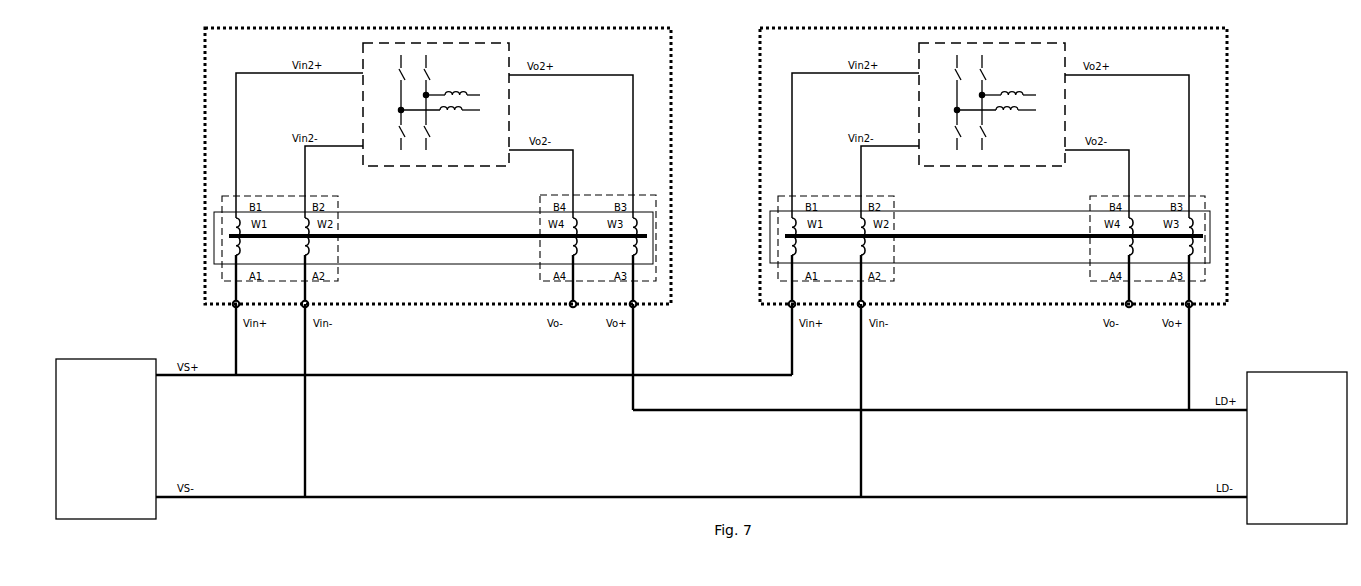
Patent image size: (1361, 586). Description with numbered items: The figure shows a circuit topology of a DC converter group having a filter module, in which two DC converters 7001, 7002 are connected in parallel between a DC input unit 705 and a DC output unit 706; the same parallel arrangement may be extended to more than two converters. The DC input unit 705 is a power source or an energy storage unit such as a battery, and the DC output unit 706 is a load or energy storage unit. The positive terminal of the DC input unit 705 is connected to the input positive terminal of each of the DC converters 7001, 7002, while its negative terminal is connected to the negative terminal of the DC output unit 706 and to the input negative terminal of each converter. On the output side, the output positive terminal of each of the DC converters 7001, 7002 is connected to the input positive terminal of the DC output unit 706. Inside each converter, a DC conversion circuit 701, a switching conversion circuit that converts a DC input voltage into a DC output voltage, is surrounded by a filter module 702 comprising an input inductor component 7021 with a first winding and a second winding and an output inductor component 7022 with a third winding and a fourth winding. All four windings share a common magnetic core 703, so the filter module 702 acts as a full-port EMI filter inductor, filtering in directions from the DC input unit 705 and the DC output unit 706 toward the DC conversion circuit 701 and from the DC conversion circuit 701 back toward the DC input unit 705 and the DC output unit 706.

The DC converter 7001 is at (438, 179).
The DC converter 7002 is at (993, 179).
The DC conversion circuit 701 is at (714, 118).
The input inductor component 7021 is at (587, 232).
The output inductor component 7022 is at (841, 231).
The filter module 702 is at (712, 250).
The magnetic core 703 is at (716, 262).
The DC input unit 705 is at (106, 439).
The DC output unit 706 is at (1297, 448).